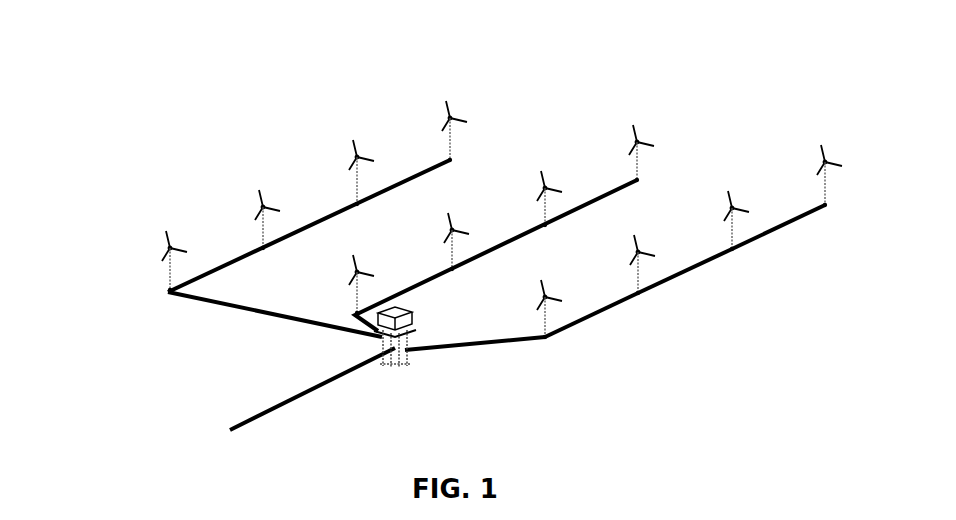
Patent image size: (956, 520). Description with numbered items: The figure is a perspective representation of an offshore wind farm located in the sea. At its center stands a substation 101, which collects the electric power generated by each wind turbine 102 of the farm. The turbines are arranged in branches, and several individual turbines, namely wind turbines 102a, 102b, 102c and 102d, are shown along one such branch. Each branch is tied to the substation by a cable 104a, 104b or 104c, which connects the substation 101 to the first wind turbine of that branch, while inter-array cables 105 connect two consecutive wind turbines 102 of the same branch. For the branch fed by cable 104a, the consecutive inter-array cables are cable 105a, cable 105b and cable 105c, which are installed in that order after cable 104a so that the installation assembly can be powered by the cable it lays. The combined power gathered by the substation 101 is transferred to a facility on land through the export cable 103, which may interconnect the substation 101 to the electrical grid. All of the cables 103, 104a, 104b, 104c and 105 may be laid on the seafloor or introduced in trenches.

The substation 101 is at (413, 369).
The wind turbine 102 is at (812, 156).
The wind turbine 102a is at (157, 230).
The wind turbine 102b is at (250, 188).
The wind turbine 102c is at (342, 145).
The wind turbine 102d is at (436, 98).
The export cable 103 is at (268, 398).
The cable 104a is at (506, 353).
The cable 104b is at (349, 323).
The cable 104c is at (184, 304).
The inter-array cable 105 is at (500, 232).
The cable 105a is at (610, 319).
The cable 105b is at (695, 278).
The cable 105c is at (793, 233).